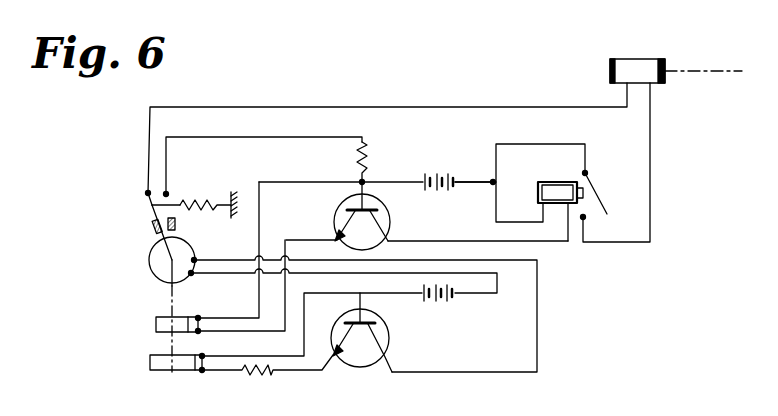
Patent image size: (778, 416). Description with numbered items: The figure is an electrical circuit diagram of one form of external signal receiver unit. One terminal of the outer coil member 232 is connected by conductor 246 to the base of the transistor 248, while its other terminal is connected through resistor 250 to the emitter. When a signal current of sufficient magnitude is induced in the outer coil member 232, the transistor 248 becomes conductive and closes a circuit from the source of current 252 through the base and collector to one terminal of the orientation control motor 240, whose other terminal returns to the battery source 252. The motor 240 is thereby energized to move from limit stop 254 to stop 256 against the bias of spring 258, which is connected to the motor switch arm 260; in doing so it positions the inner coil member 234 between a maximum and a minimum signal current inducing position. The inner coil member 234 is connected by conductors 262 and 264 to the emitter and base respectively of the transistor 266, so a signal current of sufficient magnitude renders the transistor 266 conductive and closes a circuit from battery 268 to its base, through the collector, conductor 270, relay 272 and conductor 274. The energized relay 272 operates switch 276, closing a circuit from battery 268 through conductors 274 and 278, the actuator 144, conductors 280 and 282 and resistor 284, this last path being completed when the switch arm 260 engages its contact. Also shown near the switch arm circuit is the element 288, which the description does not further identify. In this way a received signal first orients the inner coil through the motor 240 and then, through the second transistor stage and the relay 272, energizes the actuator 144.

The actuator 144 is at (636, 61).
The outer coil member 232 is at (172, 371).
The inner coil member 234 is at (156, 324).
The orientation control motor 240 is at (150, 261).
The conductor 246 is at (303, 340).
The transistor 248 is at (353, 364).
The resistor 250 is at (267, 378).
The source of current 252 is at (438, 311).
The limit stop 254 is at (177, 223).
The stop 256 is at (152, 224).
The spring 258 is at (194, 202).
The motor switch arm 260 is at (150, 206).
The conductor 262 is at (247, 333).
The conductor 264 is at (215, 317).
The transistor 266 is at (328, 226).
The battery 268 is at (440, 167).
The conductor 270 is at (458, 235).
The relay 272 is at (557, 176).
The conductor 274 is at (472, 180).
The switch 276 is at (600, 203).
The conductor 278 is at (651, 193).
The conductor 280 is at (416, 106).
The conductor 282 is at (268, 142).
The resistor 284 is at (366, 164).
The terminal 288 is at (168, 191).